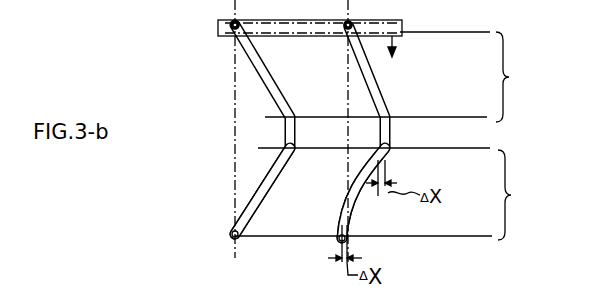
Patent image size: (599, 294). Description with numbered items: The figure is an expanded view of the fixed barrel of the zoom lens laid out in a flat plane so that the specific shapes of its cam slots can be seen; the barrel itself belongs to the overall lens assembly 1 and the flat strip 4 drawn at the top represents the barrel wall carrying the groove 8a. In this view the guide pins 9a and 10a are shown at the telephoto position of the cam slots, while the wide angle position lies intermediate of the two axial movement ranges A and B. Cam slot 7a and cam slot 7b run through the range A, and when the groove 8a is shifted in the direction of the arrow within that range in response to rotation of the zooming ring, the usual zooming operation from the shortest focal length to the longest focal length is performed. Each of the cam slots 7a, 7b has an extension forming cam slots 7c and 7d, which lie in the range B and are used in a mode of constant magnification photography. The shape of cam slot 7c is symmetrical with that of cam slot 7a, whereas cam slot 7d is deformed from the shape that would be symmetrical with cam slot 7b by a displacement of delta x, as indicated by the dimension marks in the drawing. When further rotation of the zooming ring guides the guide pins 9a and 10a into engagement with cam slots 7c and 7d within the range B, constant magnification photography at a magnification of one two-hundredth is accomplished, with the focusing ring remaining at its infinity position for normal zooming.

The apparatus 1 is at (110, 4).
The frame member 4 is at (445, 16).
The cam slot 7a is at (252, 70).
The cam slot 7b is at (372, 78).
The cam slot 7c is at (269, 187).
The cam slot 7d is at (353, 205).
The groove 8a is at (362, 21).
The guide pin 9a is at (229, 31).
The guide pin 10a is at (344, 36).
The axial movement range A is at (514, 77).
The axial movement range B is at (516, 195).